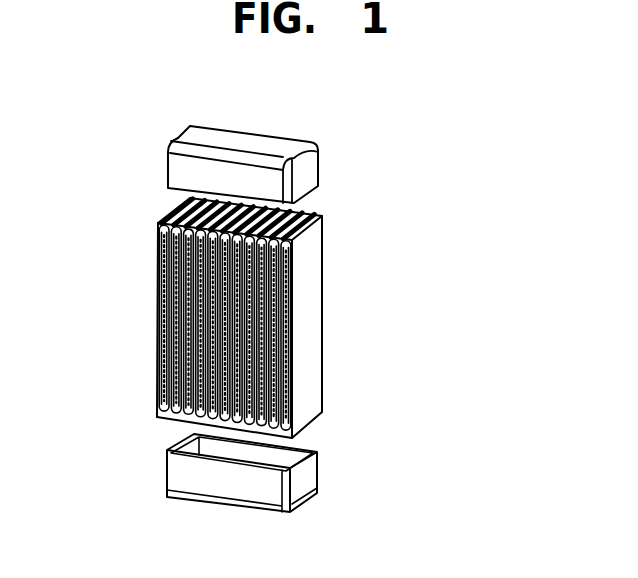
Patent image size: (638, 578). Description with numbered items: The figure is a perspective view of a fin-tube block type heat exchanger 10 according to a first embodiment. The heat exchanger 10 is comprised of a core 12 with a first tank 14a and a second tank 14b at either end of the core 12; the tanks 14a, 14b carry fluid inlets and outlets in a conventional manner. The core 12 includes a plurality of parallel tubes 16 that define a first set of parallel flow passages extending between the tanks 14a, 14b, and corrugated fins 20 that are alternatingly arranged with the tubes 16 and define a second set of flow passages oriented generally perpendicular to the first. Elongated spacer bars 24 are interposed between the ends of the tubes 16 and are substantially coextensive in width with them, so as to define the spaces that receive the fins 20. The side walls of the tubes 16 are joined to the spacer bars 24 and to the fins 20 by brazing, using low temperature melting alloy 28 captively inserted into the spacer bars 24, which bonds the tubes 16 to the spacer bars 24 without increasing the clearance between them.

The fin-tube block type heat exchanger 10 is at (425, 141).
The core 12 is at (215, 294).
The first tank 14a is at (275, 133).
The second tank 14b is at (318, 470).
The tubes 16 is at (176, 424).
The corrugated fins 20 is at (138, 271).
The spacer bars 24 is at (182, 201).
The low temperature melting alloy 28 is at (160, 223).